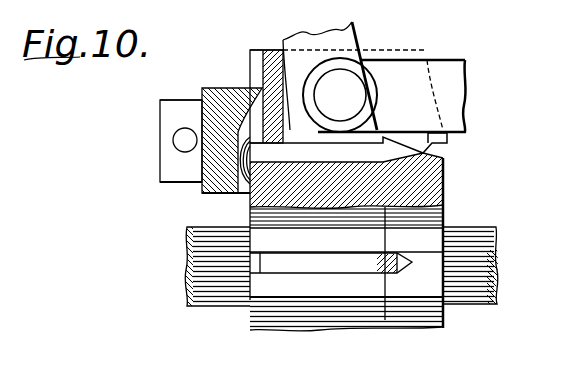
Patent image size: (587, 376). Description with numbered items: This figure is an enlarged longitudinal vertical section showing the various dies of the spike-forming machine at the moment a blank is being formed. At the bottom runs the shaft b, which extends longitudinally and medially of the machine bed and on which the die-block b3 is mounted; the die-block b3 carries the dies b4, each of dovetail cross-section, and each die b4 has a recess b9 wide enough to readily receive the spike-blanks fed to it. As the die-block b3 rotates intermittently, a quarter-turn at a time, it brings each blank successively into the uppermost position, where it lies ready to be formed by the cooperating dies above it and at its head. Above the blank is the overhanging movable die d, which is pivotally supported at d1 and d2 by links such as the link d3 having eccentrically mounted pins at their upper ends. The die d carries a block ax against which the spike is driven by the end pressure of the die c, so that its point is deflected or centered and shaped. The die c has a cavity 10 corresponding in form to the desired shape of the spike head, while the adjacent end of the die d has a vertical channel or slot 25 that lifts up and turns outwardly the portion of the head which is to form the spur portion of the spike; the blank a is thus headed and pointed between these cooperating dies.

The vertical channel or slot 25 is at (253, 31).
The overhanging movable die d is at (253, 62).
The cavity 10 is at (182, 78).
The die c is at (200, 98).
The link d3 is at (339, 93).
The pivot d1 is at (367, 65).
The pivot d2 is at (407, 72).
The spike-blank a is at (348, 139).
The block ax is at (433, 128).
The die-block b3 is at (445, 207).
The shaft b is at (477, 230).
The die b4 is at (265, 280).
The recess b9 is at (297, 263).